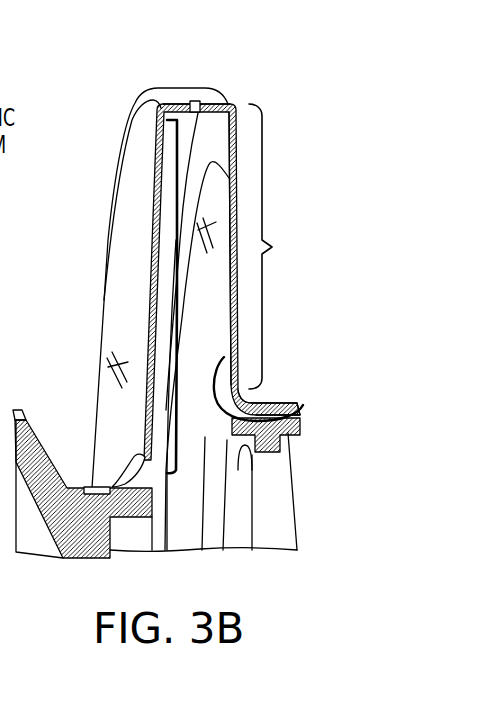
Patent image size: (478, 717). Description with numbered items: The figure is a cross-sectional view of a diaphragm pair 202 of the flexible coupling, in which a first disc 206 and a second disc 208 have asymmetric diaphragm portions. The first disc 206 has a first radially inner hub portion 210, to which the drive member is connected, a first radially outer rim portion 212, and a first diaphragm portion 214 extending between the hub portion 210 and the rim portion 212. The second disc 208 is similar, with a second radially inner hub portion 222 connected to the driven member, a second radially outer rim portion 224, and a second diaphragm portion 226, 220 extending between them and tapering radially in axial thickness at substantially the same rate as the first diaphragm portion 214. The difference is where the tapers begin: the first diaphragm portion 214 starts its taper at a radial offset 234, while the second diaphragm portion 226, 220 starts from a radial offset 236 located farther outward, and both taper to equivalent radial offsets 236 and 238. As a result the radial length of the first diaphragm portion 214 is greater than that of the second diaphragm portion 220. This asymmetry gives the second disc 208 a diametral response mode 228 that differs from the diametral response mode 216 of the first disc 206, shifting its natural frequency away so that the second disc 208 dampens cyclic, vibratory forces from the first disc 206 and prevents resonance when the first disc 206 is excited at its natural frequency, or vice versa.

The dispensing assembly 202 is at (189, 71).
The first disc 206 is at (130, 172).
The second disc 208 is at (303, 405).
The first radially inner hub portion 210 is at (128, 505).
The first radially outer rim portion 212 is at (175, 105).
The first diaphragm portion 214 is at (178, 293).
The diametral response mode 216 is at (116, 362).
The second diaphragm portion 220 is at (180, 487).
The second radially inner hub portion 222 is at (228, 418).
The second radially outer rim portion 224 is at (232, 107).
The second diaphragm portion 226 is at (288, 246).
The diametral response mode 228 is at (207, 230).
The radial offset 234 is at (260, 397).
The radial offset 236 is at (178, 118).
The radial offset 238 is at (228, 115).